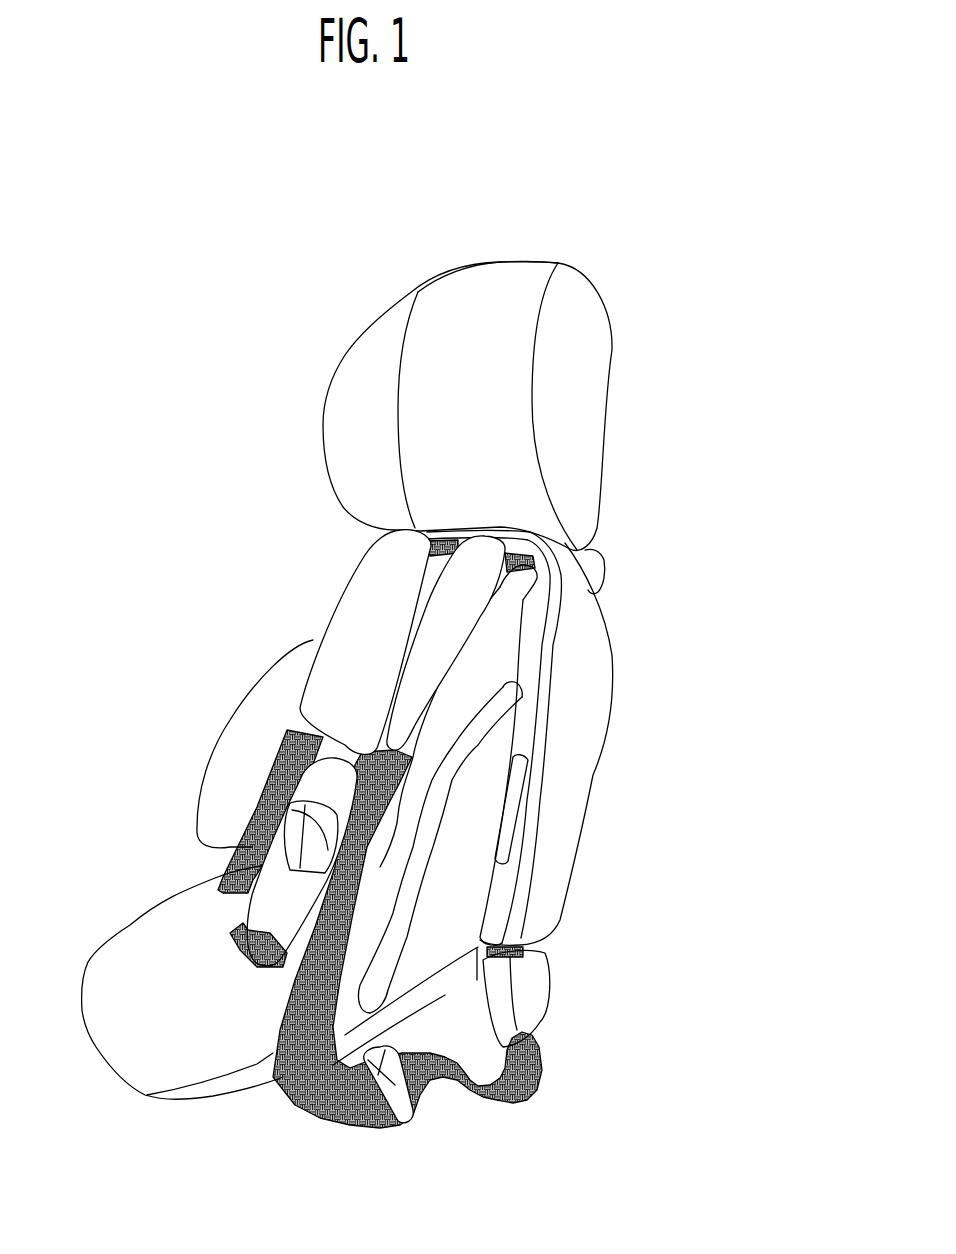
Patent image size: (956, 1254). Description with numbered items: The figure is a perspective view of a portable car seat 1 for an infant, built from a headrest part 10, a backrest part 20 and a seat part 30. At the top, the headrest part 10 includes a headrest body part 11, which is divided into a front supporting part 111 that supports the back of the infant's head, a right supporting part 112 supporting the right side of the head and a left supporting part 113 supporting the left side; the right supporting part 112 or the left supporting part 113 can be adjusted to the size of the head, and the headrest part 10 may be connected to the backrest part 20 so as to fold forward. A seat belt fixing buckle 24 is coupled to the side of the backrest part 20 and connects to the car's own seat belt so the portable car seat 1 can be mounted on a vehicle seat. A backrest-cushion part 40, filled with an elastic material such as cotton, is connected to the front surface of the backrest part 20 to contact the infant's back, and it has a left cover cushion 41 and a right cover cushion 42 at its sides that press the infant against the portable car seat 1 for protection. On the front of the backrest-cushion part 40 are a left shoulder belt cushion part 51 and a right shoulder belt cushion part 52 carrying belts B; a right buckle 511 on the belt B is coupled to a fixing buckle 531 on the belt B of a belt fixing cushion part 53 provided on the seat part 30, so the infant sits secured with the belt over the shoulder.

The portable car seat 1 is at (152, 204).
The headrest part 10 is at (510, 337).
The headrest body part 11 is at (469, 337).
The front supporting part 111 is at (510, 298).
The right supporting part 112 is at (375, 337).
The left supporting part 113 is at (573, 359).
The backrest part 20 is at (415, 804).
The seat belt fixing buckle 24 is at (515, 798).
The seat part 30 is at (108, 960).
The backrest-cushion part 40 is at (497, 664).
The left cover cushion 41 is at (467, 867).
The right cover cushion 42 is at (232, 738).
The left shoulder belt cushion part 51 is at (373, 570).
The right shoulder belt cushion part 52 is at (437, 622).
The belt fixing cushion part 53 is at (227, 862).
The fixing buckle 531 is at (264, 843).
The right buckle 511 is at (402, 1100).
The belt B is at (292, 728).